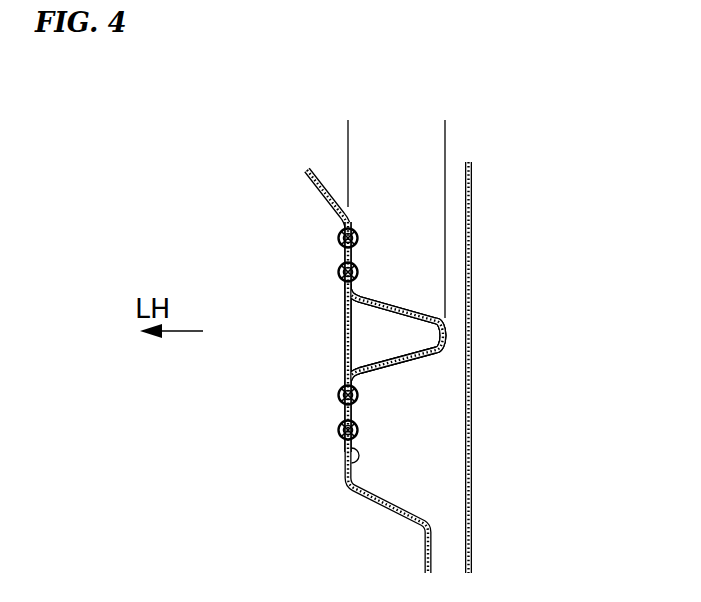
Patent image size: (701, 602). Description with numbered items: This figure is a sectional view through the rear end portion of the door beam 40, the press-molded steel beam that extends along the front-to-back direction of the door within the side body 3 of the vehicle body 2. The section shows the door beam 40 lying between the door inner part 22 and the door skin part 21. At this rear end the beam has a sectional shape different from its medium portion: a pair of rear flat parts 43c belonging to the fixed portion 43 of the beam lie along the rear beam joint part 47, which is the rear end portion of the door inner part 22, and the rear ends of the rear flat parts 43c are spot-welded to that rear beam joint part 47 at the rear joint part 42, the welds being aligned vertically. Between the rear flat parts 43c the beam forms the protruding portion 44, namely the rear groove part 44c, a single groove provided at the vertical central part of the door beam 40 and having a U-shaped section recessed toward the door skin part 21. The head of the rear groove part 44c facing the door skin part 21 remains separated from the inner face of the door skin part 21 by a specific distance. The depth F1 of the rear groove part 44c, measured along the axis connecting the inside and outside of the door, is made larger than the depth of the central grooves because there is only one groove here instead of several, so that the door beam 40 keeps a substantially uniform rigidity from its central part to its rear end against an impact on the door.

The vehicle body 2 is at (554, 367).
The side body portion 3 is at (514, 520).
The door skin part 21 is at (480, 472).
The door inner part 22 is at (370, 506).
The door beam 40 is at (454, 317).
The rear joint part 42 is at (338, 272).
The fixed portion of bracket 43 is at (400, 337).
The rear flat part 43c is at (353, 257).
The protruding portion of bracket 44 is at (484, 320).
The rear groove part 44c is at (418, 309).
The rear beam joint part 47 is at (351, 463).
The depth of the rear groove part F1 is at (445, 128).